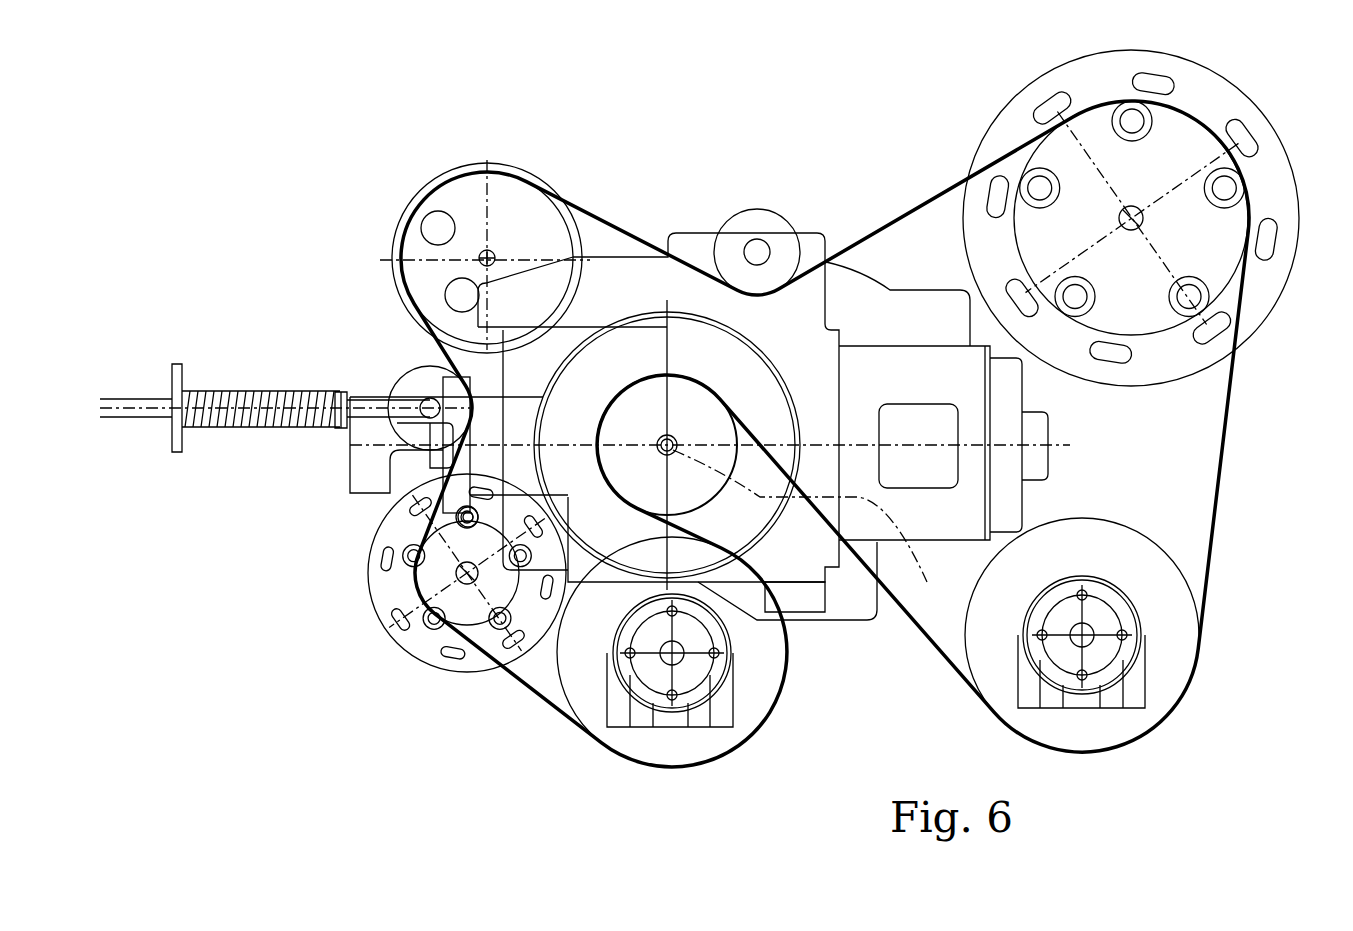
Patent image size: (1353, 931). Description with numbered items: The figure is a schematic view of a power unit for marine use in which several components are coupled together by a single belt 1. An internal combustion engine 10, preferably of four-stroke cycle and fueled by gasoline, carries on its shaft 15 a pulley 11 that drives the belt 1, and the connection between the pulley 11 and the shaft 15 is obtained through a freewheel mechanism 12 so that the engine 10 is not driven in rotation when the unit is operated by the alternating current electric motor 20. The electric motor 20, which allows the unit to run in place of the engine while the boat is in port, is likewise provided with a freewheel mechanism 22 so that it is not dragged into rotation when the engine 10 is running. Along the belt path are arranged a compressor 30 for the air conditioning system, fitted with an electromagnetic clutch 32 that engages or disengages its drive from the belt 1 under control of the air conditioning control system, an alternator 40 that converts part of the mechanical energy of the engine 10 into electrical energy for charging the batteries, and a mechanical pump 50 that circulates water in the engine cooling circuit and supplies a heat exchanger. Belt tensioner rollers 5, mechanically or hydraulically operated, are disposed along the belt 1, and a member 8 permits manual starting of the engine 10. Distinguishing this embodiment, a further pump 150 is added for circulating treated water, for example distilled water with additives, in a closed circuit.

The belt 1 is at (928, 198).
The belt tensioner rollers 5 is at (410, 382).
The member for manual starting 8 is at (357, 473).
The internal combustion engine 10 is at (970, 517).
The pulley 11 is at (640, 410).
The freewheel mechanism 12 is at (745, 520).
The shaft 15 is at (811, 526).
The electric motor 20 is at (1262, 292).
The freewheel mechanism 22 is at (1108, 127).
The compressor 30 is at (524, 162).
The electromagnetic clutch 32 is at (415, 248).
The alternator 40 is at (412, 645).
The mechanical pump 50 is at (647, 670).
The further pump 150 is at (1100, 657).